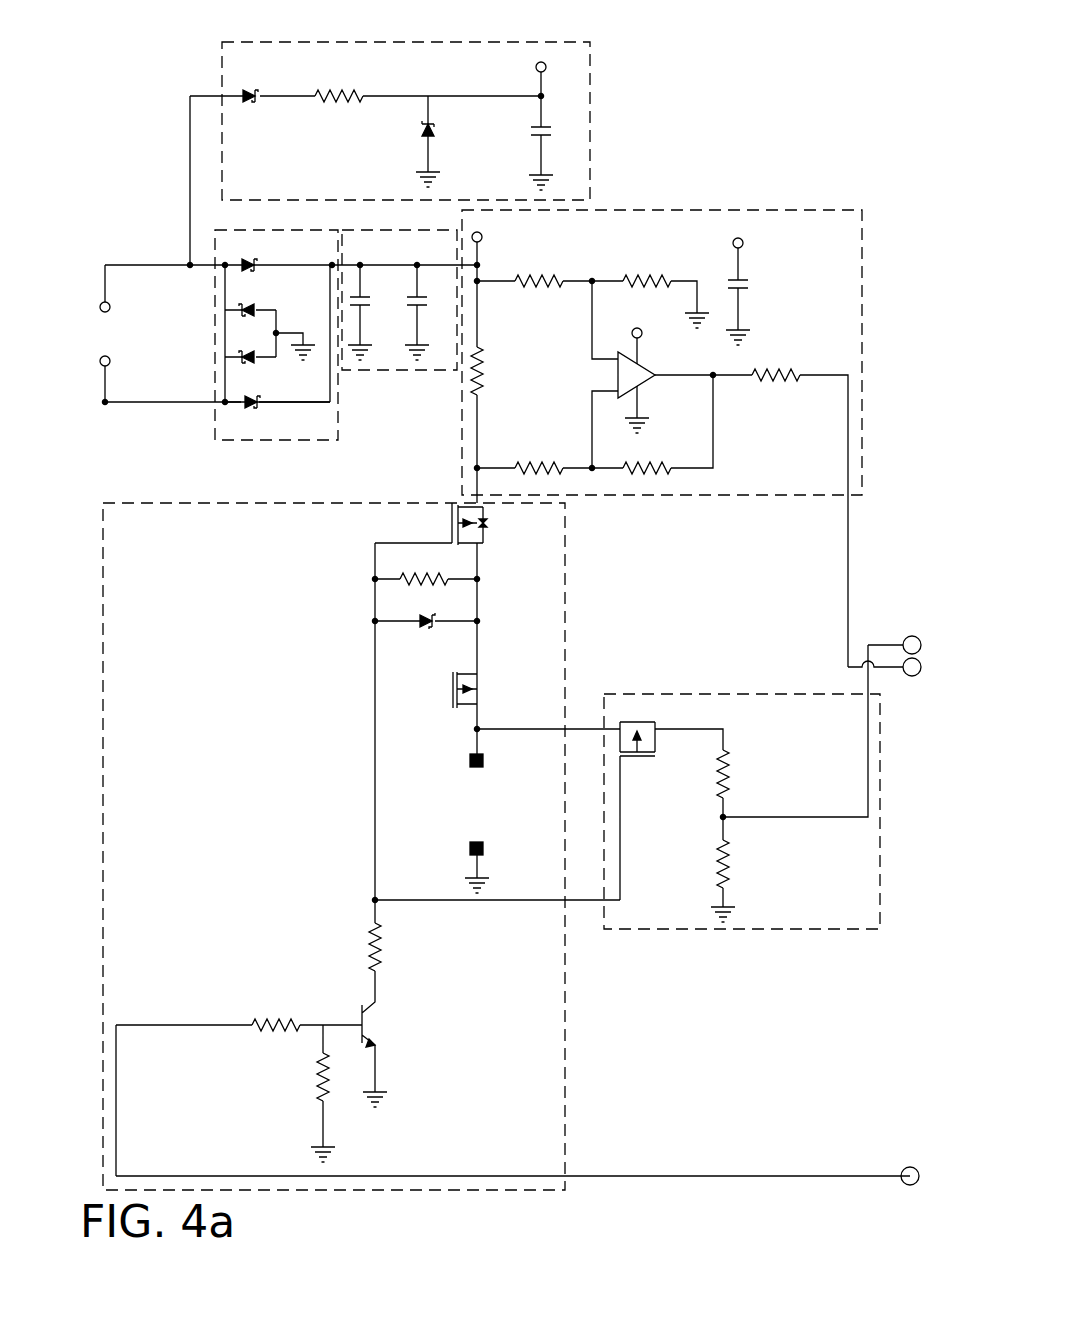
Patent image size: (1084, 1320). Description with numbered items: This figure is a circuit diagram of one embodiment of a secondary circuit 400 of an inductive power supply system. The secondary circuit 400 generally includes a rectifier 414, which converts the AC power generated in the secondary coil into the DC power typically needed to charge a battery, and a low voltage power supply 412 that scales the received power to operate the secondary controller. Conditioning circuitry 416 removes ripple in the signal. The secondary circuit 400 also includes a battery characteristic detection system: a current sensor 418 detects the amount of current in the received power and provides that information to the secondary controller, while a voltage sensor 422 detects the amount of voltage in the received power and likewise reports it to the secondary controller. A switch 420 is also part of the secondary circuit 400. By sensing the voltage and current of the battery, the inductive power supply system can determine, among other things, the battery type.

The secondary circuit 400 is at (493, 616).
The low voltage power supply 412 is at (590, 110).
The rectifier 414 is at (215, 419).
The conditioning circuitry 416 is at (397, 372).
The current sensor 418 is at (660, 210).
The switch 420 is at (565, 577).
The voltage sensor 422 is at (739, 694).